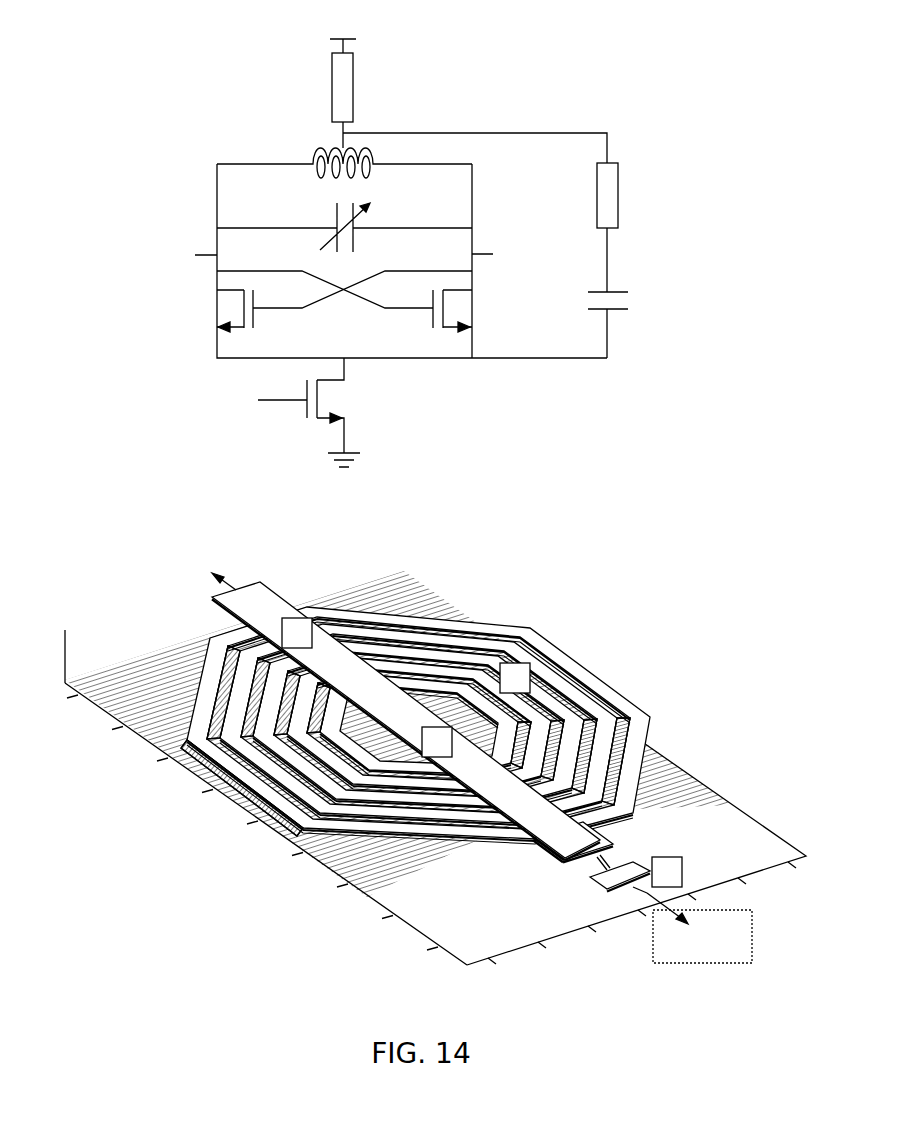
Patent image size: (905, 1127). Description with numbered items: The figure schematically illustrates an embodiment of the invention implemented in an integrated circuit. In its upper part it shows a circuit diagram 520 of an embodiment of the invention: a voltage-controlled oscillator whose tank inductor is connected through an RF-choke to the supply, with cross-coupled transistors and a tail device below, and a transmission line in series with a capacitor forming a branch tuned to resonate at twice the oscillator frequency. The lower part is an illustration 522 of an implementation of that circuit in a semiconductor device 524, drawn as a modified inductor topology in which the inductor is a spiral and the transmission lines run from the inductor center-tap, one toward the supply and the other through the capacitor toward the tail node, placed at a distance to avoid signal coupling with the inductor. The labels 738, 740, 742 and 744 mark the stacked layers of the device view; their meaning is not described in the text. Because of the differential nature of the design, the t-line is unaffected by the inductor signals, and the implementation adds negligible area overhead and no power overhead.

The circuit diagram 520 is at (577, 66).
The illustration 522 is at (578, 549).
The semiconductor device 524 is at (534, 921).
The metal layer 738 is at (65, 672).
The metal layer 740 is at (65, 658).
The metal layer 742 is at (65, 645).
The metal layer 744 is at (65, 632).